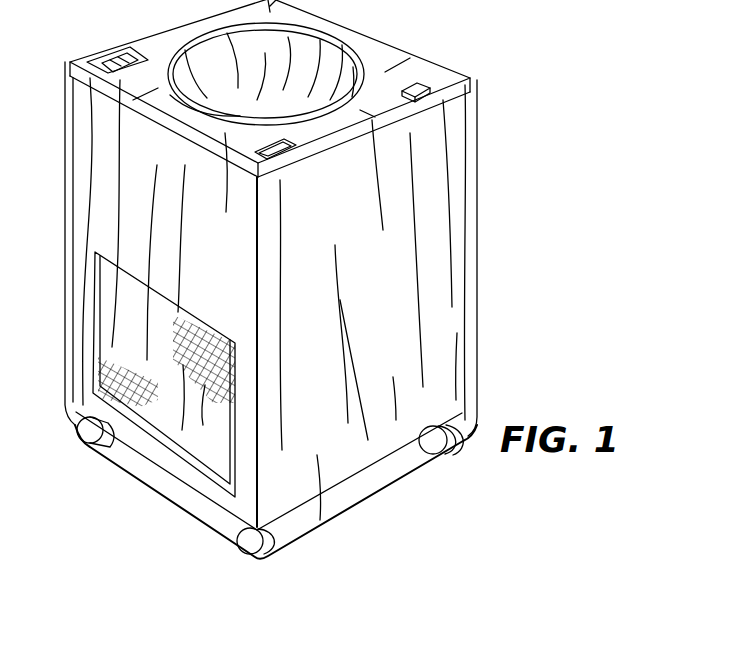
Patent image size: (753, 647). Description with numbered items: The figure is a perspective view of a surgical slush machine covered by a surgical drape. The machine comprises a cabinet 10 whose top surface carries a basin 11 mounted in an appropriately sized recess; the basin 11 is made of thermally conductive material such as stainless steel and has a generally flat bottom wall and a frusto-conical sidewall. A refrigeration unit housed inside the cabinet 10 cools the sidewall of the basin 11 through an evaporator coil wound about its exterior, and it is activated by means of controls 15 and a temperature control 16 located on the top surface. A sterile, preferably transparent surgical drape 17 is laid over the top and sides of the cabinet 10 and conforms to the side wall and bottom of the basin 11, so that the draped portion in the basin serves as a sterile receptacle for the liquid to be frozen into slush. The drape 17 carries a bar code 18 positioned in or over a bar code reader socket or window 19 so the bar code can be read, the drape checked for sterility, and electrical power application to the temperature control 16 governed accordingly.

The cabinet 10 is at (488, 73).
The basin 11 is at (357, 62).
The controls 15 is at (428, 90).
The temperature control 16 is at (294, 150).
The surgical drape 17 is at (473, 272).
The bar code 18 is at (101, 53).
The bar code reader socket or window 19 is at (89, 61).